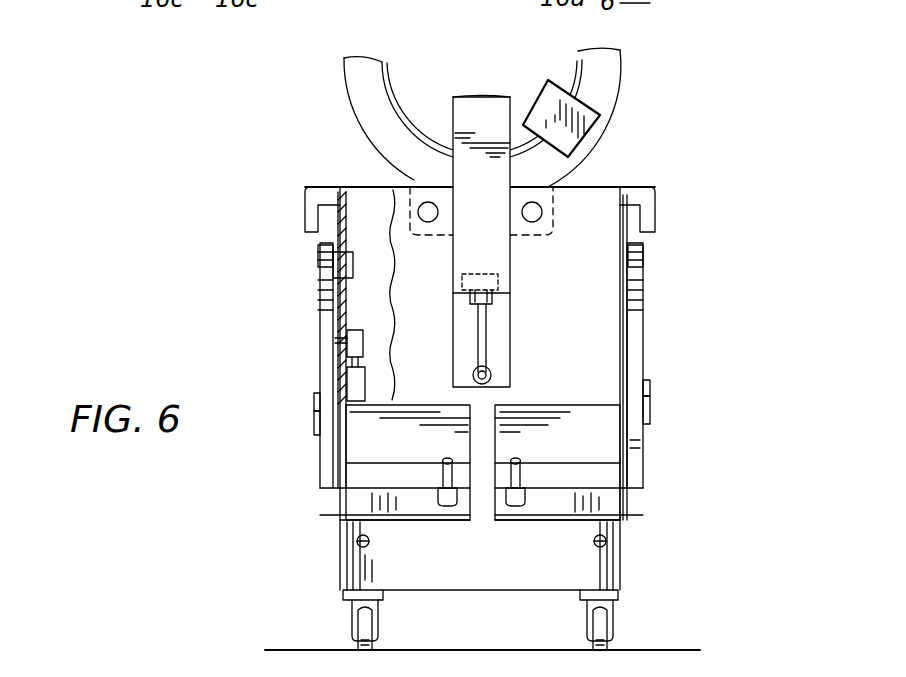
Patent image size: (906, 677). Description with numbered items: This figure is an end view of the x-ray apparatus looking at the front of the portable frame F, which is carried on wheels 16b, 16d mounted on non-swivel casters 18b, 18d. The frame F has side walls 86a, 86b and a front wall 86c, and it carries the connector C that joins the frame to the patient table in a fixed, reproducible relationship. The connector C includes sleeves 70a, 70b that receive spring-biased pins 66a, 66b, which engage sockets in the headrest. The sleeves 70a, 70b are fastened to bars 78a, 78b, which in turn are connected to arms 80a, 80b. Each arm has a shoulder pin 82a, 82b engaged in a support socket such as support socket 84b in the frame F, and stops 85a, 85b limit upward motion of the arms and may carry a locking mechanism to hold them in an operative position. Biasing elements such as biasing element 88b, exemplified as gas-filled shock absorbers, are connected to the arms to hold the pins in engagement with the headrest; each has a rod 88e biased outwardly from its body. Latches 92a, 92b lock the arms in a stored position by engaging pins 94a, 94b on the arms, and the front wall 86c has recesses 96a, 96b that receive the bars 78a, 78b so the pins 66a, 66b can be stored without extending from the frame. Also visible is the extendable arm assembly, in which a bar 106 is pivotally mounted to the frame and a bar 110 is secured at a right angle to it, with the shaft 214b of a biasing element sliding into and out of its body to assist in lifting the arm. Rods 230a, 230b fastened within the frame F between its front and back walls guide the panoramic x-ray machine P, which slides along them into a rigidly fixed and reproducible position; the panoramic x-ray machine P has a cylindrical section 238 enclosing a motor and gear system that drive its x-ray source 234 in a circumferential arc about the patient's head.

The panoramic x-ray machine P is at (622, 66).
The frame F is at (600, 186).
The connector C is at (645, 294).
The cylindrical section 238 is at (344, 88).
The x-ray source 234 is at (558, 79).
The bar 110 is at (466, 98).
The bar 106 is at (465, 267).
The shaft 214b is at (492, 338).
The rod 88e is at (462, 336).
The rod 230a is at (543, 213).
The rod 230b is at (432, 201).
The stop 85a is at (657, 207).
The stop 85b is at (303, 210).
The support socket 84b is at (355, 188).
The shoulder pin 82a is at (644, 257).
The shoulder pin 82b is at (318, 267).
The biasing element 88b is at (352, 374).
The pin 94a is at (650, 393).
The pin 94b is at (315, 400).
The latch 92a is at (650, 410).
The latch 92b is at (318, 422).
The recess 96a is at (568, 415).
The recess 96b is at (407, 415).
The arm 80a is at (642, 452).
The arm 80b is at (318, 463).
The sleeve 70a is at (518, 488).
The sleeve 70b is at (442, 481).
The bar 78a is at (557, 512).
The bar 78b is at (421, 515).
The pin 66a is at (518, 458).
The pin 66b is at (444, 459).
The side wall 86a is at (625, 548).
The side wall 86b is at (338, 558).
The front wall 86c is at (505, 570).
The non-swivel caster 18b is at (618, 607).
The non-swivel caster 18d is at (380, 618).
The wheel 16b is at (612, 643).
The wheel 16d is at (357, 647).